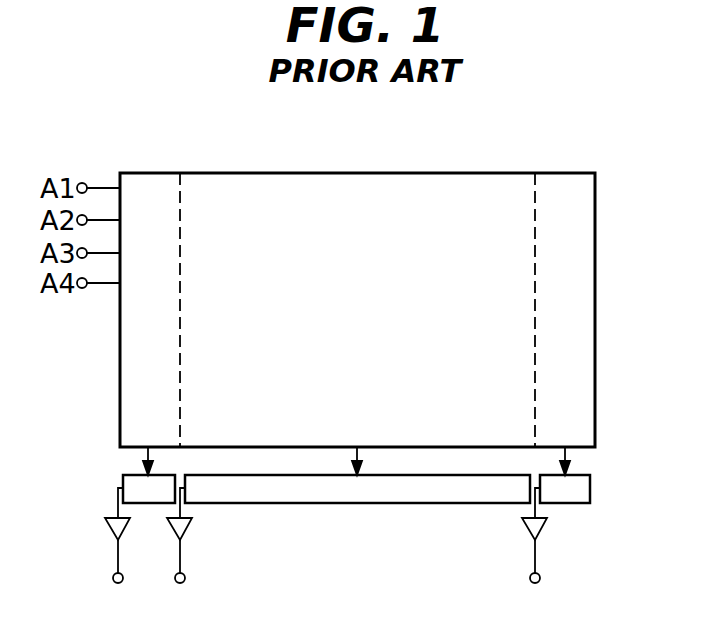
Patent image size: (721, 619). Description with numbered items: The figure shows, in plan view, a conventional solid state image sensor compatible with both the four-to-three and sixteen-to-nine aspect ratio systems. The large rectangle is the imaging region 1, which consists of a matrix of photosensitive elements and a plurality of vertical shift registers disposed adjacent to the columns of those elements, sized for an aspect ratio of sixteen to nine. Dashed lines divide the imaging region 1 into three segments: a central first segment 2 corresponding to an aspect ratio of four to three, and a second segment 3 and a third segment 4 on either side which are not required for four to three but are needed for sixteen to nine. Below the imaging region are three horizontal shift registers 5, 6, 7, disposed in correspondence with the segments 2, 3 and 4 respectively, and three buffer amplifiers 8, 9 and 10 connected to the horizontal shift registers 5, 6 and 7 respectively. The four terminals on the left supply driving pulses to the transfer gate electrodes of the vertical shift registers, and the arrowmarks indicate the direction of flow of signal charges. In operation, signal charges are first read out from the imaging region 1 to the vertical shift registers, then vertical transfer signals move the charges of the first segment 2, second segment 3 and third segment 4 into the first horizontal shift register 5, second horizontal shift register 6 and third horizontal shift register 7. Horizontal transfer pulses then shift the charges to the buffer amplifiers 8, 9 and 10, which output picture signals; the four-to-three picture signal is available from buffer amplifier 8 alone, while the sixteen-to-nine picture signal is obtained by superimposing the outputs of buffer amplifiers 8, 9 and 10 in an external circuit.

The imaging region 1 is at (312, 175).
The first segment 2 is at (462, 188).
The second segment 3 is at (153, 187).
The third segment 4 is at (572, 188).
The first horizontal shift register 5 is at (352, 490).
The second horizontal shift register 6 is at (130, 475).
The third horizontal shift register 7 is at (578, 489).
The buffer amplifier 8 is at (187, 528).
The buffer amplifier 9 is at (124, 528).
The buffer amplifier 10 is at (544, 528).